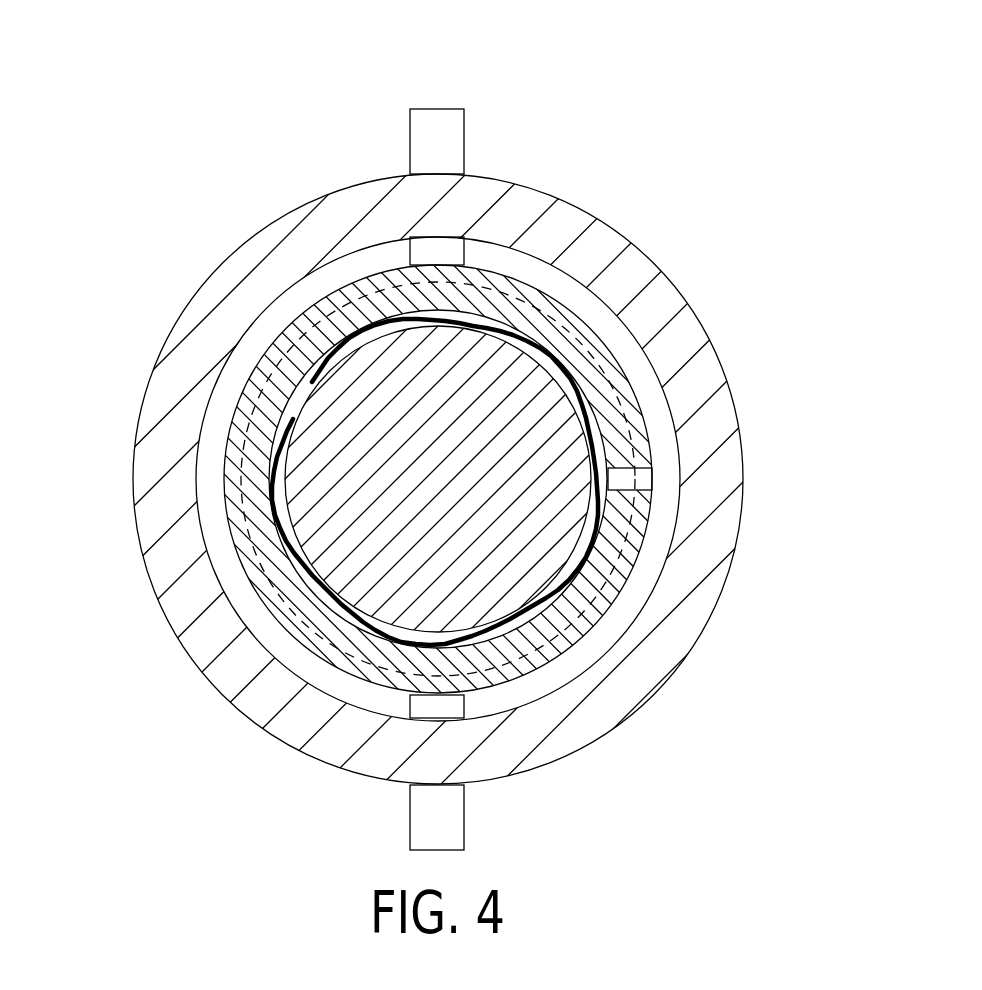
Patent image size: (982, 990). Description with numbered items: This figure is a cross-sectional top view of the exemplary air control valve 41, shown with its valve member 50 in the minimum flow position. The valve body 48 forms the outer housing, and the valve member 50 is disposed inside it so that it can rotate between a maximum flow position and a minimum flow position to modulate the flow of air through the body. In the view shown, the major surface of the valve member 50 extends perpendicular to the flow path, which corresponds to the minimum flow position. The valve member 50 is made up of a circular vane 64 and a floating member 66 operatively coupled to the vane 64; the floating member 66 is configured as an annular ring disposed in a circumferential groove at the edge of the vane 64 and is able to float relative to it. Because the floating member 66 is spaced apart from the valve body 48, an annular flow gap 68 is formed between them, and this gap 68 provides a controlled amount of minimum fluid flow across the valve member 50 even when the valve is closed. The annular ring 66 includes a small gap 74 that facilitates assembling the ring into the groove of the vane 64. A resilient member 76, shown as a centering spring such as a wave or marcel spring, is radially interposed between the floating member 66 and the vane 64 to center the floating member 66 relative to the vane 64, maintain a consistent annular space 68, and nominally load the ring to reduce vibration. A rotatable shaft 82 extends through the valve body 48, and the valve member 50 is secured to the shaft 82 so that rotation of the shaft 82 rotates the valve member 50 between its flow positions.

The air control valve 41 is at (152, 104).
The valve body 48 is at (185, 322).
The valve member 50 is at (563, 293).
The vane 64 is at (218, 687).
The floating member 66 is at (240, 543).
The annular flow gap 68 is at (208, 481).
The gap 74 is at (640, 481).
The resilient member 76 is at (578, 412).
The rotatable shaft 82 is at (449, 818).